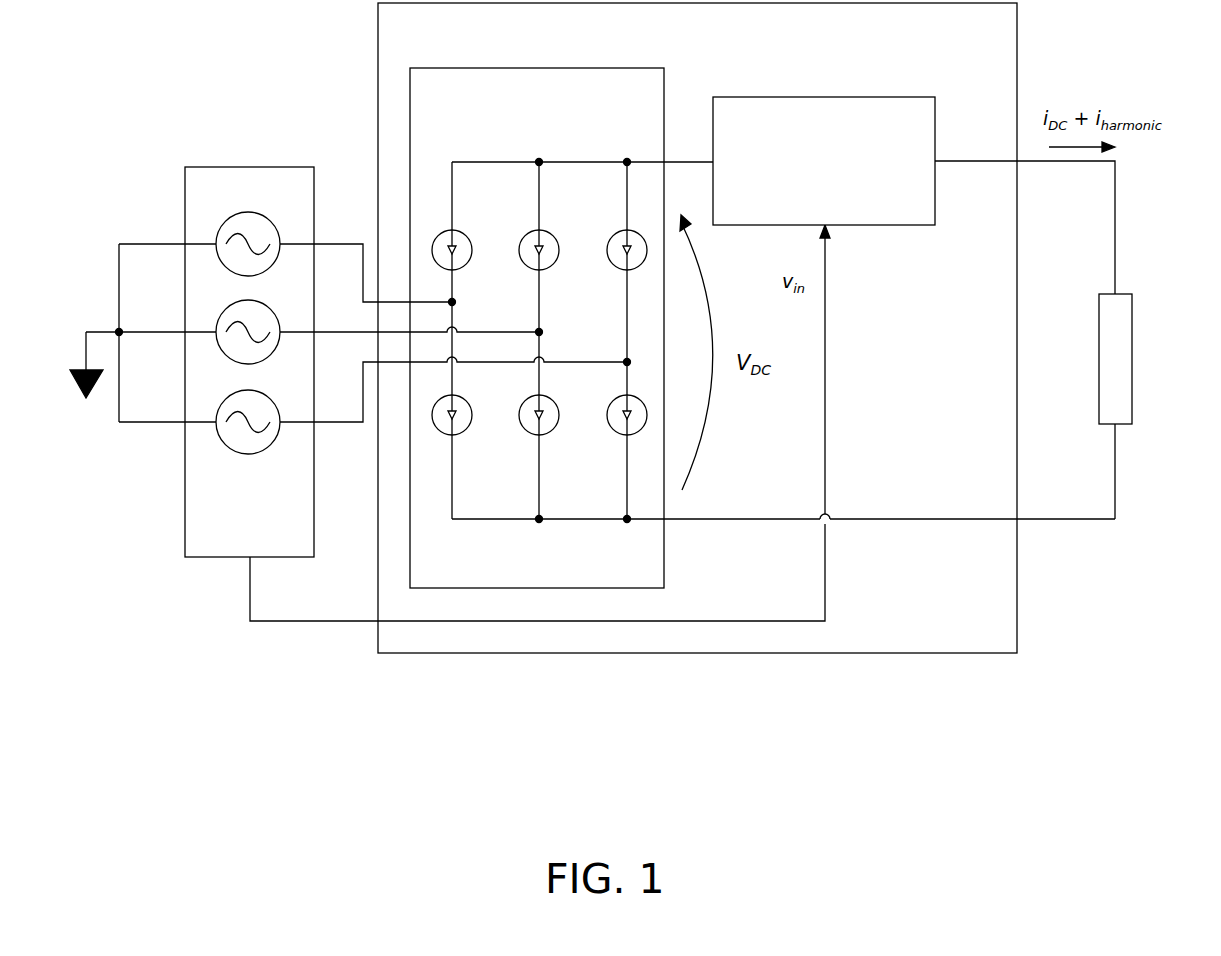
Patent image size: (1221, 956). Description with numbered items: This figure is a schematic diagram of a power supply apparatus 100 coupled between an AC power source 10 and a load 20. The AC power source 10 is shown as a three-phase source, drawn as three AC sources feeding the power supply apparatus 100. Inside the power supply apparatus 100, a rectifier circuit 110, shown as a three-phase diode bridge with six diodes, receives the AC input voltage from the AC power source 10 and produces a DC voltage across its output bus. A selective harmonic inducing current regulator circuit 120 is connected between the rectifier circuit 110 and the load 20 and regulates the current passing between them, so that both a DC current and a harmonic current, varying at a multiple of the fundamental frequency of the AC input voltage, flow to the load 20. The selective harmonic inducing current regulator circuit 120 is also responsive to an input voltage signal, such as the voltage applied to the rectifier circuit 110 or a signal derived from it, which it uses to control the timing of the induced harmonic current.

The AC power source 10 is at (247, 167).
The load 20 is at (1133, 357).
The power supply apparatus 100 is at (698, 653).
The rectifier circuit 110 is at (538, 68).
The selective harmonic inducing current regulator circuit 120 is at (827, 97).